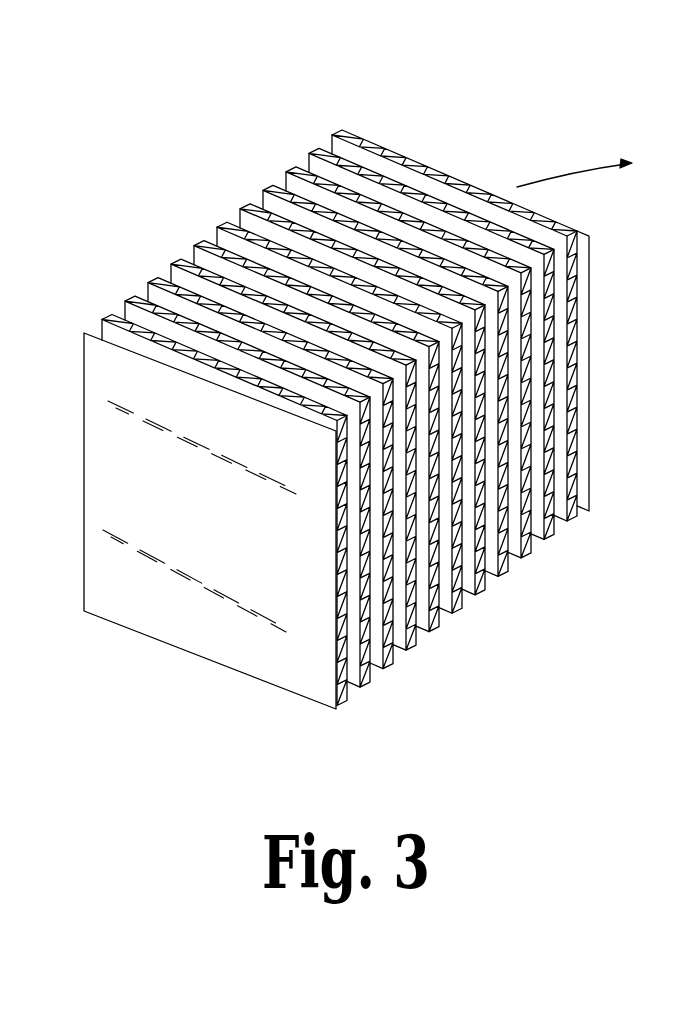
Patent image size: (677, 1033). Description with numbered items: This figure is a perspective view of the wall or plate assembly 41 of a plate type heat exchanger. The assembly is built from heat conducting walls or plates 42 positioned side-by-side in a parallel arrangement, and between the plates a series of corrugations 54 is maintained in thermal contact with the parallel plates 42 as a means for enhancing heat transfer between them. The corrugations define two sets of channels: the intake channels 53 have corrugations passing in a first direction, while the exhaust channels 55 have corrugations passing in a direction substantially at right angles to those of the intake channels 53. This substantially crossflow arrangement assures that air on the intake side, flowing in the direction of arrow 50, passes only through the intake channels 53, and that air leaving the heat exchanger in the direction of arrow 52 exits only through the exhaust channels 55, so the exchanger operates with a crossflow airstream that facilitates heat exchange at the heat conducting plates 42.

The wall or plate assembly 41 is at (205, 200).
The heat conducting walls or plates 42 is at (172, 627).
The arrow 50 is at (397, 115).
The arrow 52 is at (574, 166).
The intake channels 53 is at (350, 154).
The corrugations 54 is at (153, 283).
The exhaust channels 55 is at (581, 428).